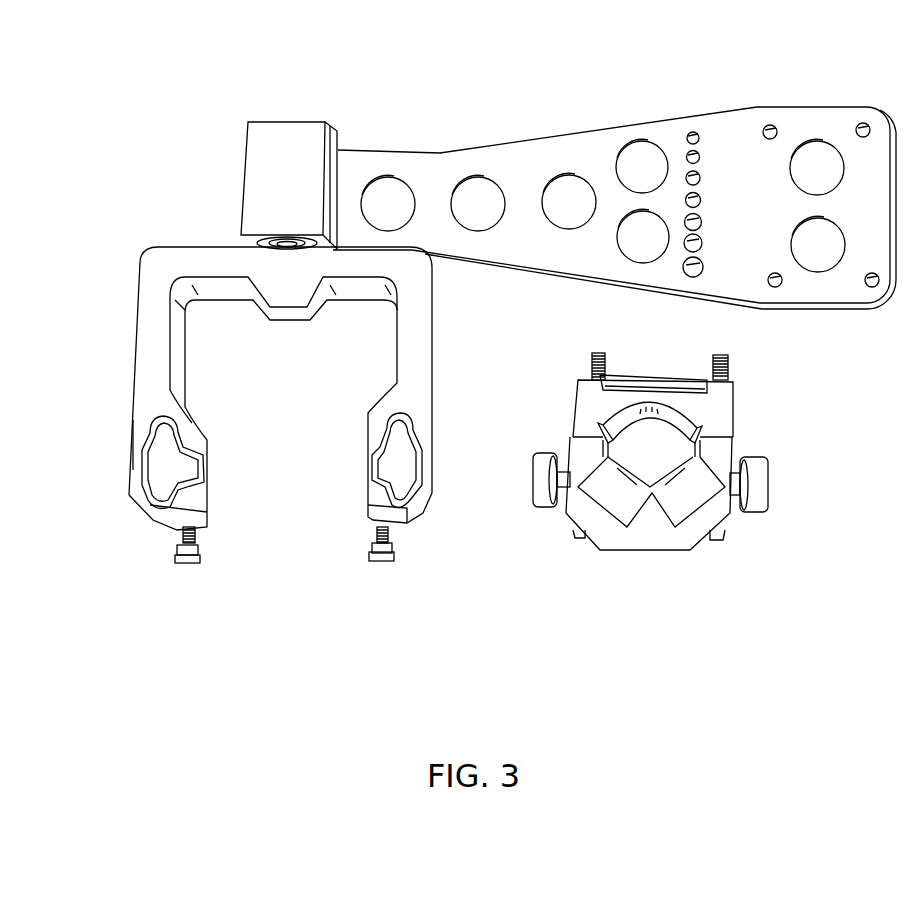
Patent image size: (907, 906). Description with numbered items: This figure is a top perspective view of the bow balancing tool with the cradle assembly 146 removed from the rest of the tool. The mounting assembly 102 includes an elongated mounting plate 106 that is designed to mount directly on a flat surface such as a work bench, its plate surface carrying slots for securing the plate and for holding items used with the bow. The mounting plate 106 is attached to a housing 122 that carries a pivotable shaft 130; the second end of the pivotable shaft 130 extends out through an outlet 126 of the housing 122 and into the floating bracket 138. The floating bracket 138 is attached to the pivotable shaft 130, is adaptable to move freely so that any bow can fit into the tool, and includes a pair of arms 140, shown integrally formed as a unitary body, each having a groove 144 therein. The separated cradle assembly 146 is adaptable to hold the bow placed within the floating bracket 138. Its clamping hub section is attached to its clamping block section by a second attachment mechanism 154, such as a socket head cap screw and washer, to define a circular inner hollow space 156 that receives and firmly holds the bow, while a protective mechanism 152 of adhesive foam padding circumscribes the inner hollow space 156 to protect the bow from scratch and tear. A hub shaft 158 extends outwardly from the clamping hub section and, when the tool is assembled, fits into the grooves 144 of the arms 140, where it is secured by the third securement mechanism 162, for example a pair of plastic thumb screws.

The mounting assembly 102 is at (748, 106).
The elongated mounting plate 106 is at (577, 133).
The housing 122 is at (287, 121).
The outlet 126 is at (288, 233).
The pivotable shaft 130 is at (272, 247).
The floating bracket 138 is at (241, 388).
The arms 140 is at (140, 372).
The groove 144 is at (163, 470).
The cradle assembly 146 is at (669, 492).
The protective mechanism 152 is at (688, 503).
The second attachment mechanism 154 is at (580, 534).
The inner hollow space 156 is at (658, 449).
The hub shaft 158 is at (733, 470).
The third securement mechanism 162 is at (178, 552).